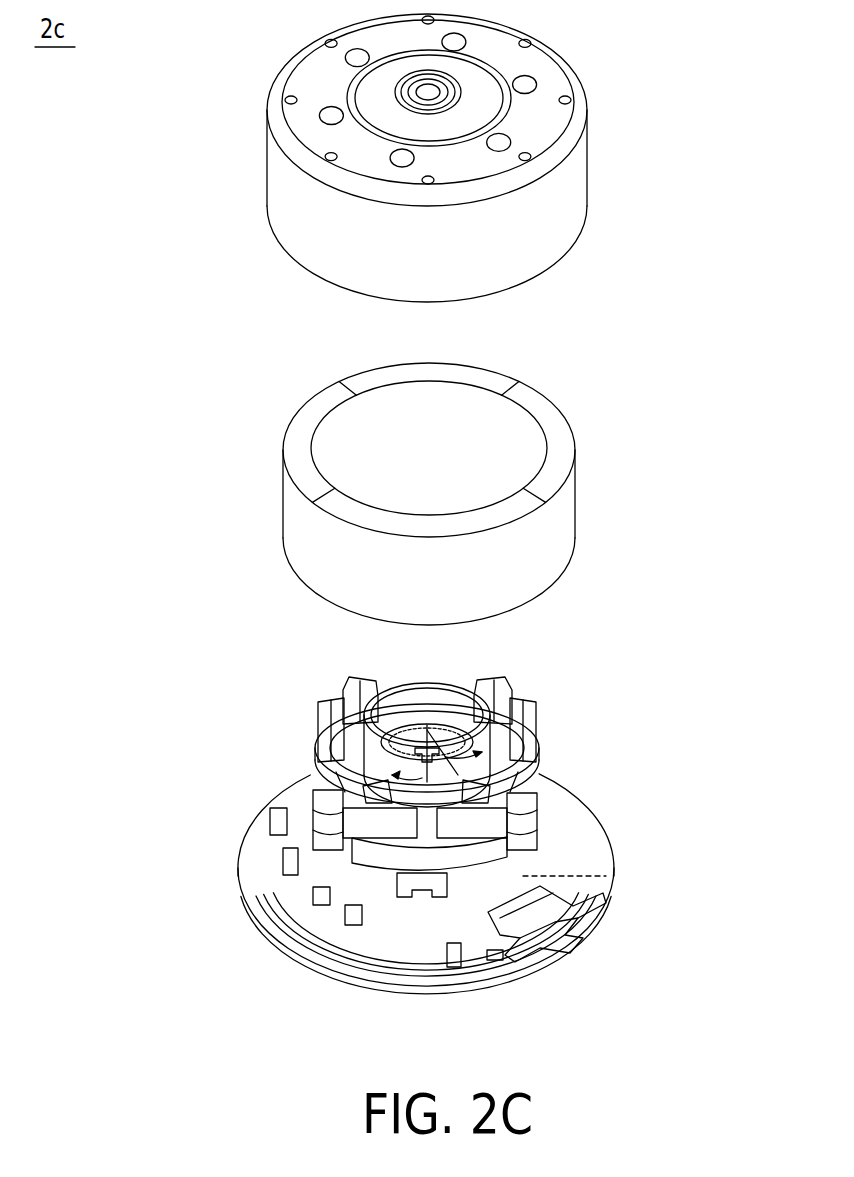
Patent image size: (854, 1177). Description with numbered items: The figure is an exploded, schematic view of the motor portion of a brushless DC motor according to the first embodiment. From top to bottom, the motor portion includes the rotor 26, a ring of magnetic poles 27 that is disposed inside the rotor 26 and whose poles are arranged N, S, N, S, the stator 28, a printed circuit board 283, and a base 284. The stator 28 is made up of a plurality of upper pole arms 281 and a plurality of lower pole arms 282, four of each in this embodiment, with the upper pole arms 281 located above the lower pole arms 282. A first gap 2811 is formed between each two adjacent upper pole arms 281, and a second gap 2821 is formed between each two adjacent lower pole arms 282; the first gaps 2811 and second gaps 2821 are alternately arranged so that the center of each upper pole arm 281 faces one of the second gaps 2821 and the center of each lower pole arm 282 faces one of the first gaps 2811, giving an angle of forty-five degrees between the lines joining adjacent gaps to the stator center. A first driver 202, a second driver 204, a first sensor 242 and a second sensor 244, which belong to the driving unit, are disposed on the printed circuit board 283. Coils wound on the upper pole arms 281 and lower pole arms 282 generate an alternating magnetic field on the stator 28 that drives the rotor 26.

The rotor 26 is at (587, 188).
The magnetic poles 27 is at (575, 530).
The stator 28 is at (693, 760).
The upper pole arms 281 is at (548, 778).
The first gap 2811 is at (422, 760).
The lower pole arms 282 is at (560, 815).
The second gap 2821 is at (600, 880).
The printed circuit board 283 is at (593, 845).
The base 284 is at (573, 945).
The first driver 202 is at (268, 822).
The second driver 204 is at (283, 866).
The first sensor 242 is at (313, 900).
The second sensor 244 is at (345, 920).